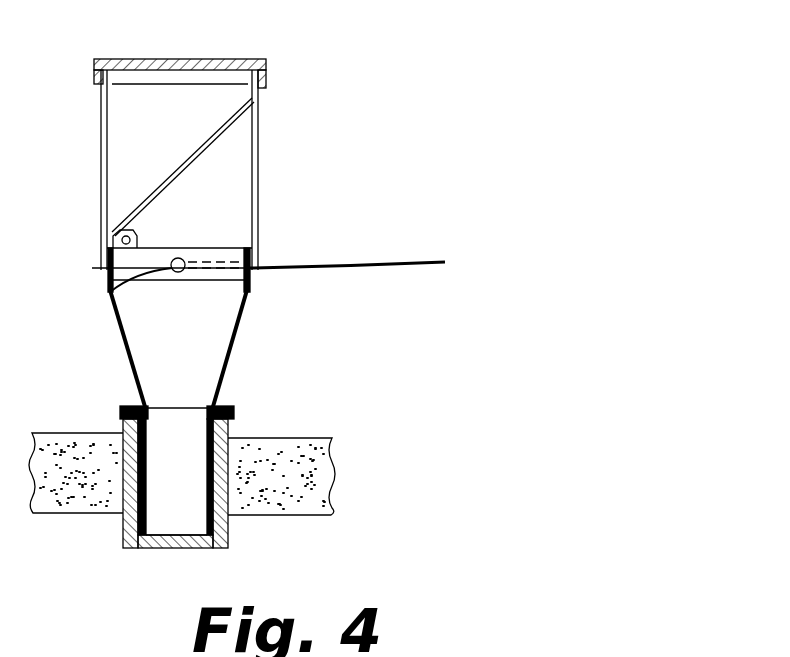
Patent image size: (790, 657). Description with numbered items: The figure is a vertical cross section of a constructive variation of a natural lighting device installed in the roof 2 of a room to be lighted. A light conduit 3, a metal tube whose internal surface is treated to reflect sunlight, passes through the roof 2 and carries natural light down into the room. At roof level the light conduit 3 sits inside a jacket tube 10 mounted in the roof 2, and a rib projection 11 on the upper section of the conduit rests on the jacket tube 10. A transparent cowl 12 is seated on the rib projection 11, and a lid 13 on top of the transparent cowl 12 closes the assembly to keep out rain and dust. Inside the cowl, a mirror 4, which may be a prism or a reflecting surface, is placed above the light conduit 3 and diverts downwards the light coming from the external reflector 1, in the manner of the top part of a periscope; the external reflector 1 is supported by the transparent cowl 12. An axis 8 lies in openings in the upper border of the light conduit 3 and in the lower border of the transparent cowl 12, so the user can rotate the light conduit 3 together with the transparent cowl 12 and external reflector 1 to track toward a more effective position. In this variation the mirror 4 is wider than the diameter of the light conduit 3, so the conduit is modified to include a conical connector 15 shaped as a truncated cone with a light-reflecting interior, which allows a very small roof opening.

The external reflector 1 is at (368, 268).
The roof 2 is at (317, 478).
The light conduit 3 is at (200, 515).
The mirror 4 is at (253, 136).
The axis 8 is at (120, 302).
The jacket tube 10 is at (230, 535).
The rib projection 11 is at (235, 413).
The transparent cowl 12 is at (255, 210).
The lid 13 is at (268, 68).
The conical connector 15 is at (235, 328).